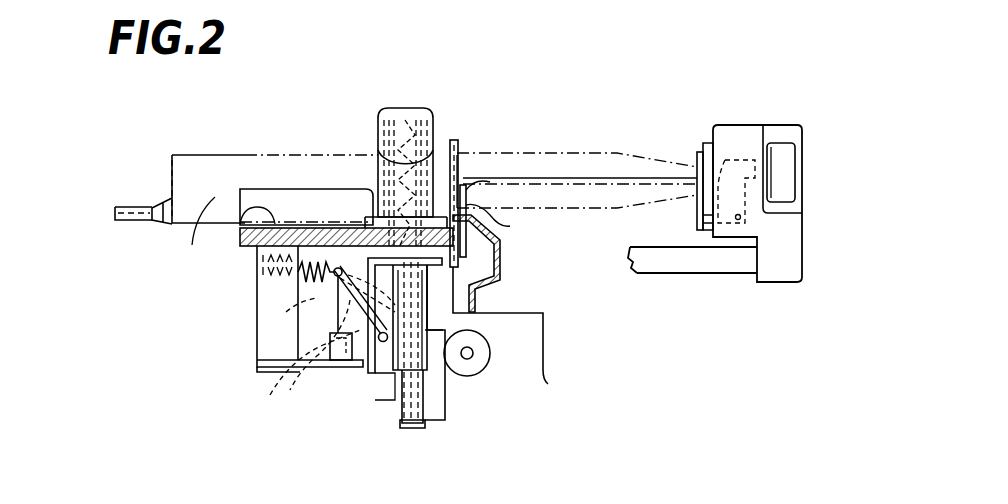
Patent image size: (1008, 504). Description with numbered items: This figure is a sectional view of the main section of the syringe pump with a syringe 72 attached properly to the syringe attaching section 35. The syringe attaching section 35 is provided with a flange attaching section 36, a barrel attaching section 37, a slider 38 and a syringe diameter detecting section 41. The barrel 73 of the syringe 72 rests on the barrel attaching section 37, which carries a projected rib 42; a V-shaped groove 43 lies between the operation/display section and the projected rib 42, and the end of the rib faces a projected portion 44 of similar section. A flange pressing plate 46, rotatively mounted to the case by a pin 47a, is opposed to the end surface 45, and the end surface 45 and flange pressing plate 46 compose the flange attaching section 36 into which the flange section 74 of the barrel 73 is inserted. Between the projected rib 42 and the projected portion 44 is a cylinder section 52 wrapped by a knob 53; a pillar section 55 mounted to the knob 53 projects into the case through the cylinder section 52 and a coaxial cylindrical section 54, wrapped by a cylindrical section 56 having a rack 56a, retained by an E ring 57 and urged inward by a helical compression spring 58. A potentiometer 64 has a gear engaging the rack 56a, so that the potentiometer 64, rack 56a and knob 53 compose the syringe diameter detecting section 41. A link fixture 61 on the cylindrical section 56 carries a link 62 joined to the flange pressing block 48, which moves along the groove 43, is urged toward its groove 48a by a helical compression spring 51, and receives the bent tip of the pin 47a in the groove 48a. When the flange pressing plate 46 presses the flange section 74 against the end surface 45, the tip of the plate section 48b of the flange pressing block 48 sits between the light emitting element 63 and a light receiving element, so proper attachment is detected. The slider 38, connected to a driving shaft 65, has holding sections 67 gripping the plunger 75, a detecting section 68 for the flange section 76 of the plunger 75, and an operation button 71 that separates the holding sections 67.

The syringe 72 is at (186, 150).
The barrel 73 is at (196, 234).
The barrel attaching section 37 is at (275, 186).
The projected rib 42 is at (304, 198).
The groove 43 is at (243, 225).
The flange pressing block 48 is at (353, 226).
The groove 48a is at (485, 282).
The plate section 48b is at (292, 365).
The syringe attaching section 35 is at (380, 104).
The cylinder section 52 is at (407, 105).
The knob 53 is at (430, 128).
The projected portion 44 is at (456, 138).
The flange section 74 is at (472, 138).
The flange attaching section 36 is at (484, 146).
The flange pressing plate 46 is at (470, 183).
The end surface 45 is at (482, 212).
The pin 47a is at (500, 236).
The plunger 75 is at (588, 158).
The holding sections 67 is at (699, 150).
The flange section 76 is at (708, 148).
The detecting section 68 is at (745, 160).
The operation button 71 is at (788, 143).
The slider 38 is at (781, 265).
The driving shaft 65 is at (706, 262).
The helical compression spring 51 is at (294, 276).
The link 62 is at (258, 356).
The helical compression spring 58 is at (296, 385).
The light emitting element 63 is at (345, 365).
The link fixture 61 is at (380, 370).
The pillar section 55 is at (386, 403).
The cylindrical section 56 is at (384, 428).
The E ring 57 is at (405, 410).
The rack 56a is at (437, 408).
The syringe diameter detecting section 41 is at (467, 412).
The potentiometer 64 is at (478, 368).
The cylindrical section 54 is at (490, 330).